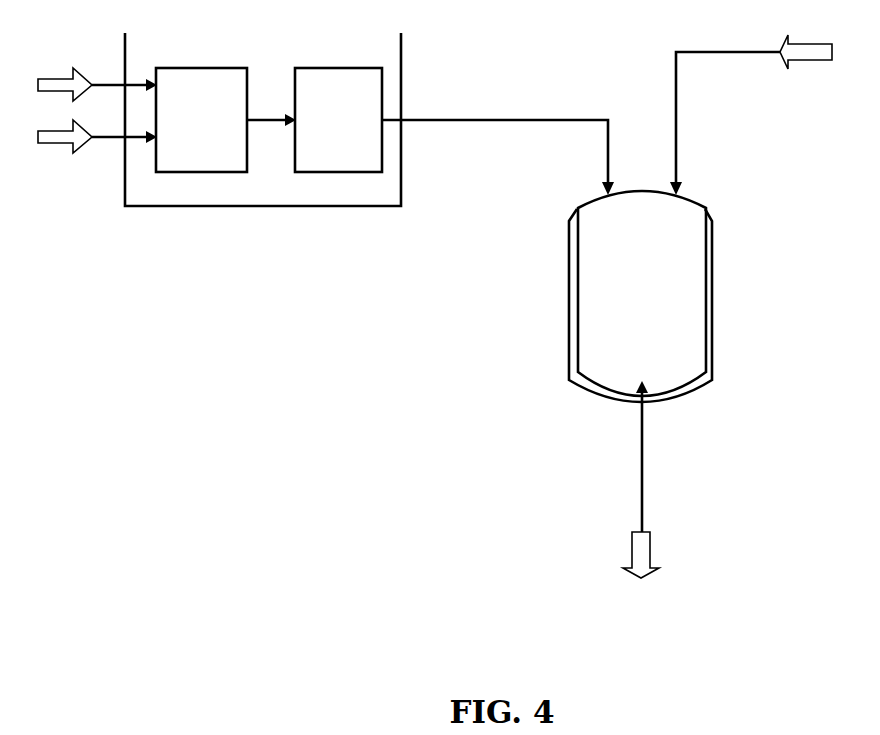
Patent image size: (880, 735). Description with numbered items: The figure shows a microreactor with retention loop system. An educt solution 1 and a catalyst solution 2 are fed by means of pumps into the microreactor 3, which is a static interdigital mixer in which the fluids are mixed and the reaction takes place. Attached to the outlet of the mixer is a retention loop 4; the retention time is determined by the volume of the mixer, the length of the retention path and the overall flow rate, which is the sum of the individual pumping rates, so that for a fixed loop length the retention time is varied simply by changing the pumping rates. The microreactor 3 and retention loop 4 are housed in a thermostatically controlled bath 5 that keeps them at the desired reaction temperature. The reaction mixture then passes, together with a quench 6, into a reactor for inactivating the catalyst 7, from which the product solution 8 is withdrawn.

The educt solution 1 is at (86, 84).
The catalyst solution 2 is at (86, 136).
The microreactor 3 is at (201, 120).
The retention loop 4 is at (338, 120).
The thermostatically controlled bath 5 is at (263, 119).
The quench 6 is at (766, 115).
The reactor for inactivating the catalyst 7 is at (640, 296).
The product solution 8 is at (641, 498).